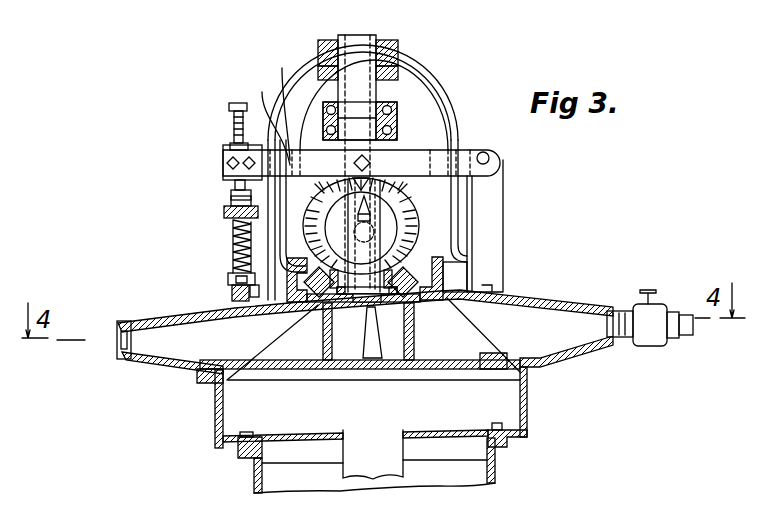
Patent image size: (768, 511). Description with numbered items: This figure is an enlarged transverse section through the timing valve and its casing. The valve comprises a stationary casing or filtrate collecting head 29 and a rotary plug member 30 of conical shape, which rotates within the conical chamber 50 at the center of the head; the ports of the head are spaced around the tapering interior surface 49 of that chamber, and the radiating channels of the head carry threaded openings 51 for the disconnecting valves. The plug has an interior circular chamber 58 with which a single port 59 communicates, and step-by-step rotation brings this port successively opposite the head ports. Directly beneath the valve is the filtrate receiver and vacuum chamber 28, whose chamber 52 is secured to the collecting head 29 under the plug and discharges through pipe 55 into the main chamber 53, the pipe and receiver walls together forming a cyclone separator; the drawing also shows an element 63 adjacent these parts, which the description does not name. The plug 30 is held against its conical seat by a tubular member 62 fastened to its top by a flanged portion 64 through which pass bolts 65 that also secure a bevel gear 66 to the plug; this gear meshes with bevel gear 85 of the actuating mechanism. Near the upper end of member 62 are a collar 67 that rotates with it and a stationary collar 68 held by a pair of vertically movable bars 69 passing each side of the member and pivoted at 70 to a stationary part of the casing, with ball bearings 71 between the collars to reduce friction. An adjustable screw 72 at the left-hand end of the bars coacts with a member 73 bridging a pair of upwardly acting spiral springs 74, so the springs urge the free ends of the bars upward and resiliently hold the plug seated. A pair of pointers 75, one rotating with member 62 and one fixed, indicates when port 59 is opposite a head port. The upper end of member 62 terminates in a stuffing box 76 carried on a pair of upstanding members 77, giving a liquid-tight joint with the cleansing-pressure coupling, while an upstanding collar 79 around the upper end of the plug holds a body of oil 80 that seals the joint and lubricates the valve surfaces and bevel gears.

The filtrate receiver and vacuum chamber 28 is at (254, 482).
The filtrate collecting head 29 is at (583, 290).
The rotary plug member 30 is at (222, 381).
The tapering interior surface 49 is at (418, 303).
The conical chamber 50 is at (312, 342).
The threaded openings 51 is at (118, 348).
The chamber 52 is at (496, 403).
The main chamber 53 is at (478, 470).
The pipe 55 is at (343, 463).
The interior circular chamber 58 is at (395, 348).
The port 59 is at (367, 342).
The tubular member 62 is at (423, 210).
The baffle 63 is at (278, 362).
The flanged portion 64 is at (468, 272).
The bolts 65 is at (428, 266).
The bevel gear 66 is at (312, 274).
The collar 67 is at (398, 106).
The collar 68 is at (398, 128).
The vertically movable bars 69 is at (262, 92).
The pivot 70 is at (490, 158).
The ball bearings 71 is at (282, 68).
The adjustable screw 72 is at (232, 122).
The member 73 is at (228, 212).
The spiral springs 74 is at (238, 238).
The pointers 75 is at (250, 178).
The stuffing box 76 is at (397, 50).
The upstanding members 77 is at (432, 80).
The upstanding collar 79 is at (236, 278).
The body of oil 80 is at (248, 287).
The bevel gear 85 is at (398, 224).